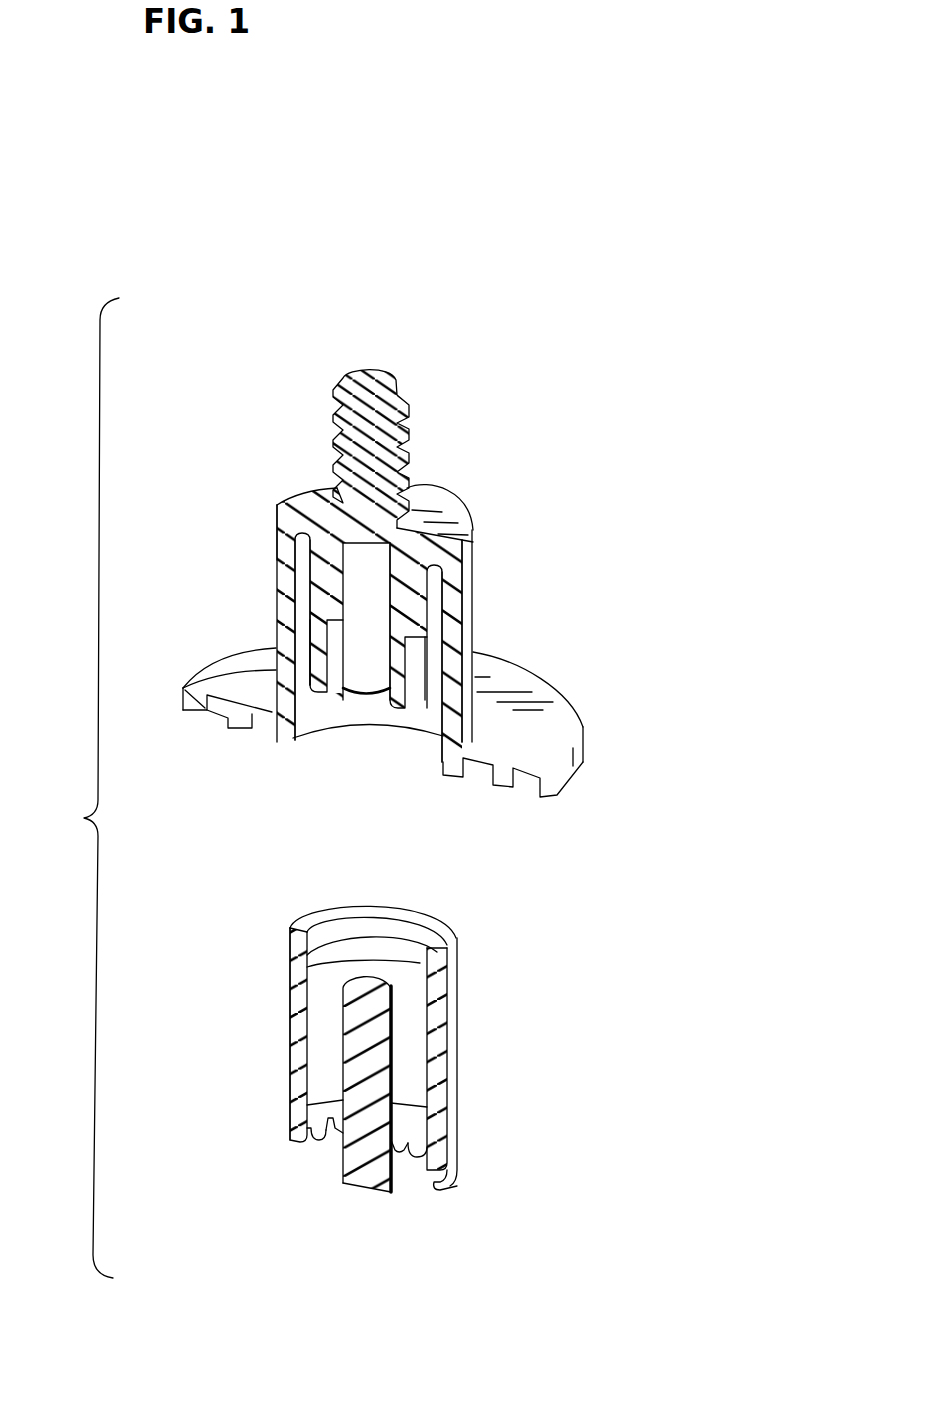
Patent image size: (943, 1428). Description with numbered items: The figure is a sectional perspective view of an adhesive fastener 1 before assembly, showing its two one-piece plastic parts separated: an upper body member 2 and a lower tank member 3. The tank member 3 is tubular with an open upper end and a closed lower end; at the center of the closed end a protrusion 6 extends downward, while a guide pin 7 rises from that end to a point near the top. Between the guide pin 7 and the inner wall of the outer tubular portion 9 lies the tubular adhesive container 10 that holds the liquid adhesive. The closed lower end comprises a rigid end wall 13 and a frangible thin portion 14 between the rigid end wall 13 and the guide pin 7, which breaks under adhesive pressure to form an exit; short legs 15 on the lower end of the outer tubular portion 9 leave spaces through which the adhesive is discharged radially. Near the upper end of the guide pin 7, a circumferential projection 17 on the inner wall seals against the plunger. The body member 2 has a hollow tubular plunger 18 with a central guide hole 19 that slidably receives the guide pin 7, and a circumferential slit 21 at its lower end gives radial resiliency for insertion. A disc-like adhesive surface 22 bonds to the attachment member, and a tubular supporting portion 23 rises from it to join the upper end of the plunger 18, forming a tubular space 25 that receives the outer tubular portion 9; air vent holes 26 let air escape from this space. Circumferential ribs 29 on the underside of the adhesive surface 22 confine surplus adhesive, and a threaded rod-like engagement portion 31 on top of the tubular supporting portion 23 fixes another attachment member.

The adhesive fastener 1 is at (84, 818).
The body member 2 is at (272, 461).
The tank member 3 is at (260, 1088).
The protrusion 6 is at (368, 1185).
The guide pin 7 is at (433, 1033).
The outer tubular portion 9 is at (452, 947).
The adhesive container 10 is at (327, 1025).
The rigid end wall 13 is at (318, 1142).
The frangible thin portion 14 is at (331, 1125).
The legs 15 is at (440, 1184).
The circumferential projection 17 is at (318, 958).
The plunger 18 is at (310, 582).
The guide hole 19 is at (380, 620).
The circumferential slit 21 is at (289, 737).
The adhesive surface 22 is at (547, 723).
The tubular supporting portion 23 is at (277, 622).
The tubular space 25 is at (297, 655).
The air vent hole 26 is at (280, 547).
The circumferential ribs 29 is at (497, 790).
The engagement portion 31 is at (380, 410).